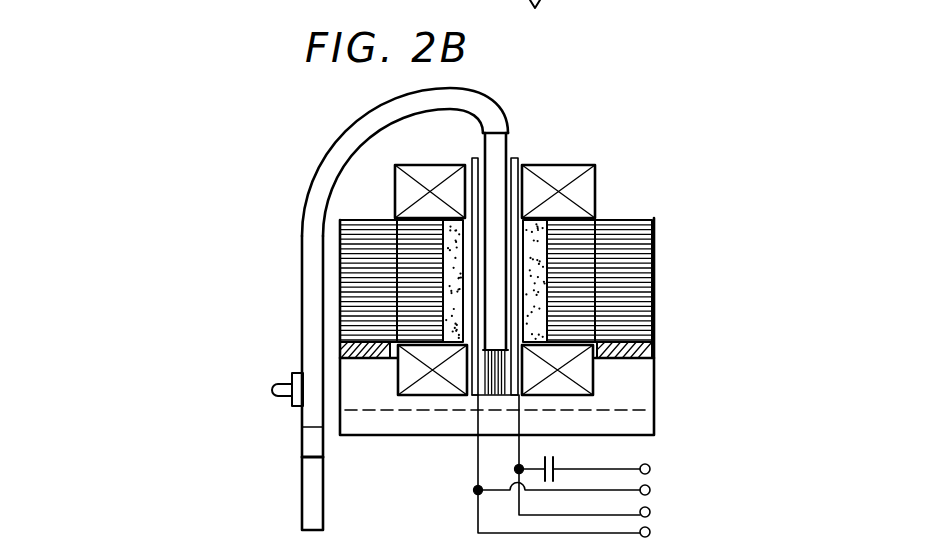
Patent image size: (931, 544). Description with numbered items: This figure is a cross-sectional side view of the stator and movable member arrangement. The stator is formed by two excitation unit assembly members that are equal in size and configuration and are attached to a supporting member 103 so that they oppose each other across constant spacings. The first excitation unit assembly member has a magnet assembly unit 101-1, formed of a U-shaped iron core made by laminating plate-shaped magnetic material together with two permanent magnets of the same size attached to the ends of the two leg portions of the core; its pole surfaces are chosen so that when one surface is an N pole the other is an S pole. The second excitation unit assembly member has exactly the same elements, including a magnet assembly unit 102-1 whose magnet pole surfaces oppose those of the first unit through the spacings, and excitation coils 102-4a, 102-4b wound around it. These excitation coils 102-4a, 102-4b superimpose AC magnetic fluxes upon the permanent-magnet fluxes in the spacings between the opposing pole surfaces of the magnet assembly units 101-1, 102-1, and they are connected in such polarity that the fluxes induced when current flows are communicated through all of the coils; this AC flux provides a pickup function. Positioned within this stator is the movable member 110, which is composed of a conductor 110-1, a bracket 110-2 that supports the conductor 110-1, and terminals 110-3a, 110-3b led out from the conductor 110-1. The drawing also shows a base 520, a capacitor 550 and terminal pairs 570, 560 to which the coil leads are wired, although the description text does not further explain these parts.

The movable member 110 is at (142, 281).
The bracket 110-2 is at (311, 293).
The terminal 110-3a is at (277, 390).
The terminal 110-3b is at (218, 382).
The conductor 110-1 is at (476, 398).
The magnet assembly unit 101-1 is at (372, 224).
The magnet assembly unit 102-1 is at (652, 262).
The excitation coil 102-4a is at (577, 193).
The excitation coil 102-4b is at (566, 272).
The supporting member 103 is at (653, 348).
The housing base 520 is at (655, 420).
The capacitor 550 is at (548, 458).
The first terminal pair 570 is at (657, 457).
The second terminal pair 560 is at (657, 503).